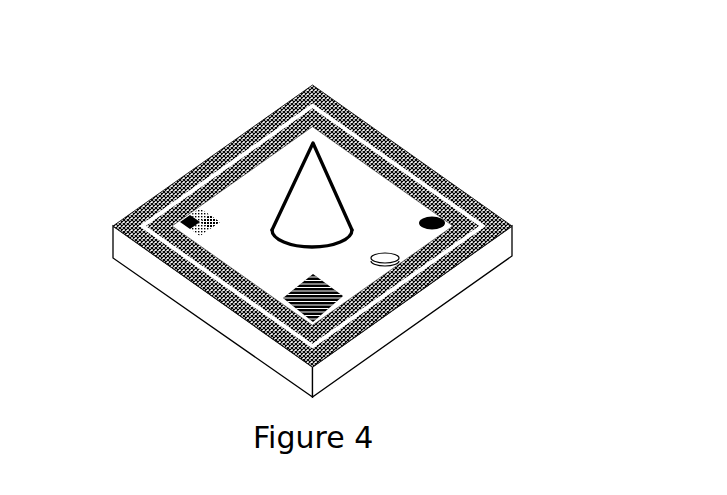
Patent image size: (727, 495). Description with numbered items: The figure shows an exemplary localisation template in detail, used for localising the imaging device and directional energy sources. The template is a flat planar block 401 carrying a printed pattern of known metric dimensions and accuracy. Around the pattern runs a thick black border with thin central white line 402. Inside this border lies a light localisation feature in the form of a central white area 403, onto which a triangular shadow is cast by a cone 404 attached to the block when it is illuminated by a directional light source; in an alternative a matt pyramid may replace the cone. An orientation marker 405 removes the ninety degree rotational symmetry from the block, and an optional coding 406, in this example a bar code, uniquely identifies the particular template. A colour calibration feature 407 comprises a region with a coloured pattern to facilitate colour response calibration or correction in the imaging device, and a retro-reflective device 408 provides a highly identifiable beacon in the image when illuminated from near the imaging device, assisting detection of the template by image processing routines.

The flat planar block 401 is at (217, 317).
The thick black border with thin central white line 402 is at (168, 264).
The central white area 403 is at (375, 195).
The cone 404 is at (313, 193).
The orientation marker 405 is at (462, 250).
The coding 406 is at (360, 334).
The colour calibration feature 407 is at (155, 197).
The retro-reflective device 408 is at (393, 268).